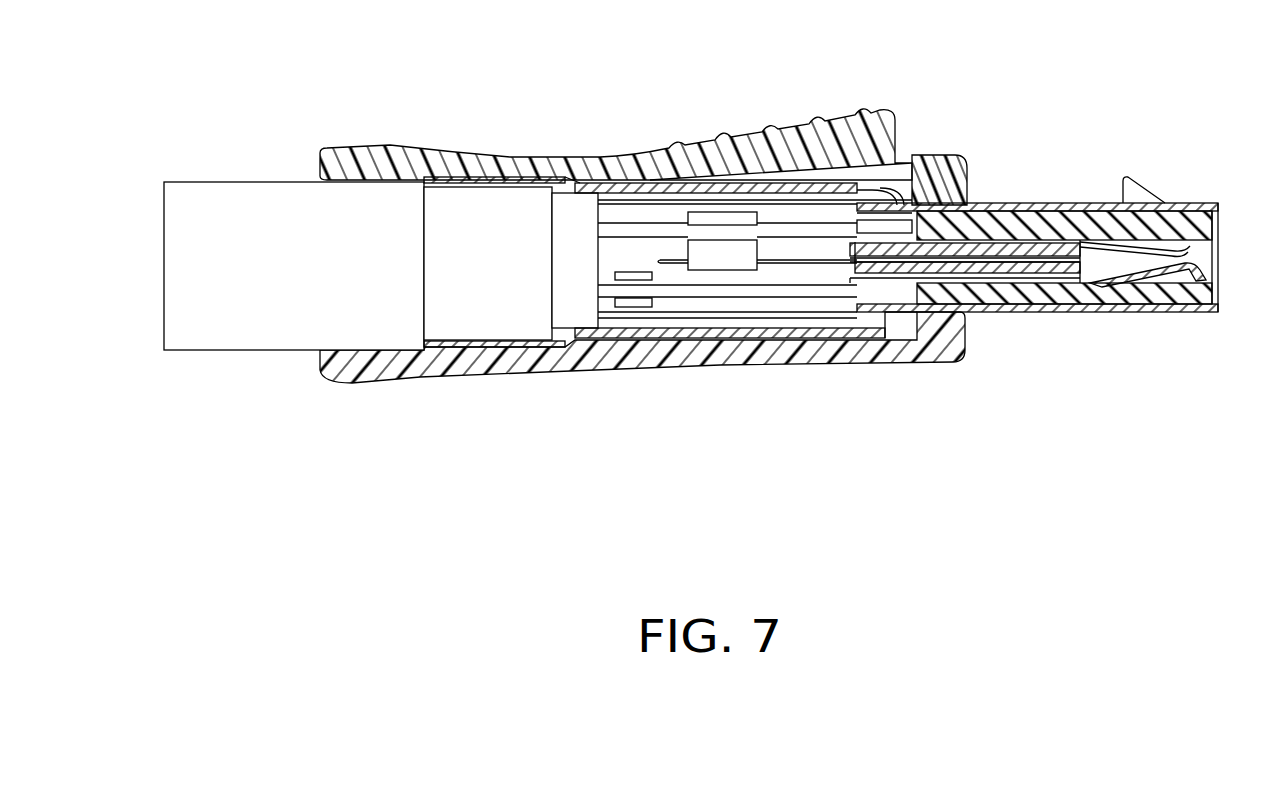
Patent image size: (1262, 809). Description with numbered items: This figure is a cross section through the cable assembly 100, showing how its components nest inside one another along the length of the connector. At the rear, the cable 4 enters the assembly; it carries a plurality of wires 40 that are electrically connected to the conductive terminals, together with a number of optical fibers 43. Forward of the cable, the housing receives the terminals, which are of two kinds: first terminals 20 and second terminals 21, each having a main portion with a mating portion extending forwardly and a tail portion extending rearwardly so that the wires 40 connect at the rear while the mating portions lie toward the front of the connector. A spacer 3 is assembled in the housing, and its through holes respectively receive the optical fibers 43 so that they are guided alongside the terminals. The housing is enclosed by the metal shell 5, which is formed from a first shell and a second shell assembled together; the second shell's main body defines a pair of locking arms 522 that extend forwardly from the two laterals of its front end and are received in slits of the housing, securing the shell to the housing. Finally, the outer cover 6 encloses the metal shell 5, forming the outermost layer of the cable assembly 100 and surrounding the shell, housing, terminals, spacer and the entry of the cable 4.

The cable assembly 100 is at (678, 112).
The outer cover 6 is at (438, 150).
The cable 4 is at (330, 313).
The wires 40 is at (806, 292).
The metal shell 5 is at (991, 202).
The locking arms 522 is at (1128, 176).
The spacer 3 is at (955, 262).
The optical fibers 43 is at (992, 258).
The first terminals 20 is at (1212, 247).
The second terminals 21 is at (1112, 278).